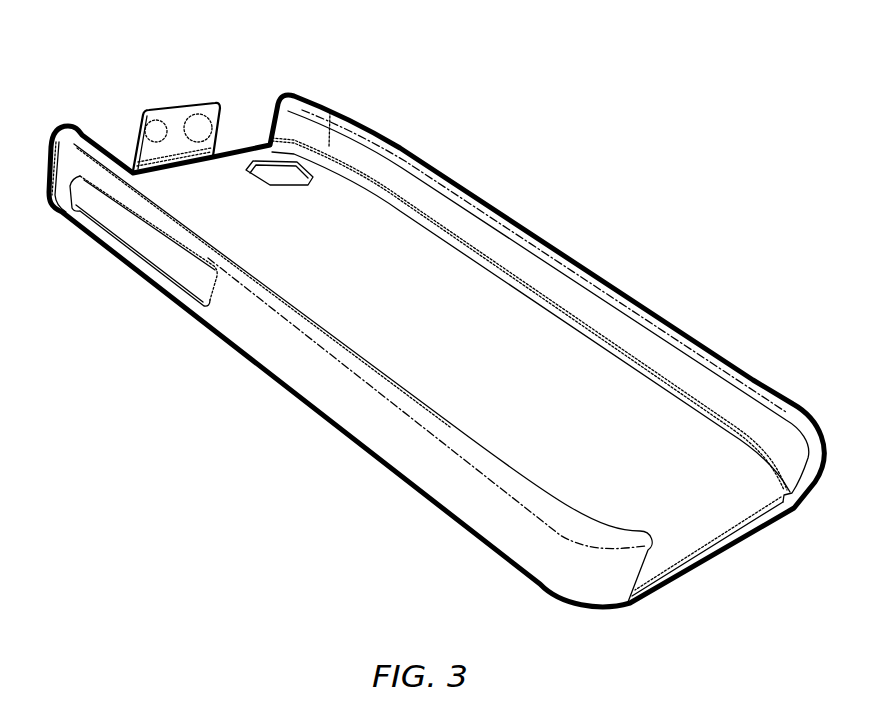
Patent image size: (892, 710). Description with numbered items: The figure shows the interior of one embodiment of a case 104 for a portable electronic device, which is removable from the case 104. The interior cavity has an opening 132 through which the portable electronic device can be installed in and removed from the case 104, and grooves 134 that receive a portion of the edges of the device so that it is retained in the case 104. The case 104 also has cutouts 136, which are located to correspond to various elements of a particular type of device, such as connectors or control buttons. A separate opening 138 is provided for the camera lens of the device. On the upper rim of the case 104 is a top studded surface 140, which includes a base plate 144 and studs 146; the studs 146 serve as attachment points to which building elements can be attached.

The case 104 is at (606, 437).
The opening 132 is at (694, 367).
The grooves 134 is at (528, 276).
The cutouts 136 is at (108, 138).
The opening 138 is at (270, 173).
The top studded surface 140 is at (176, 91).
The base plate 144 is at (181, 120).
The studs 146 is at (152, 119).